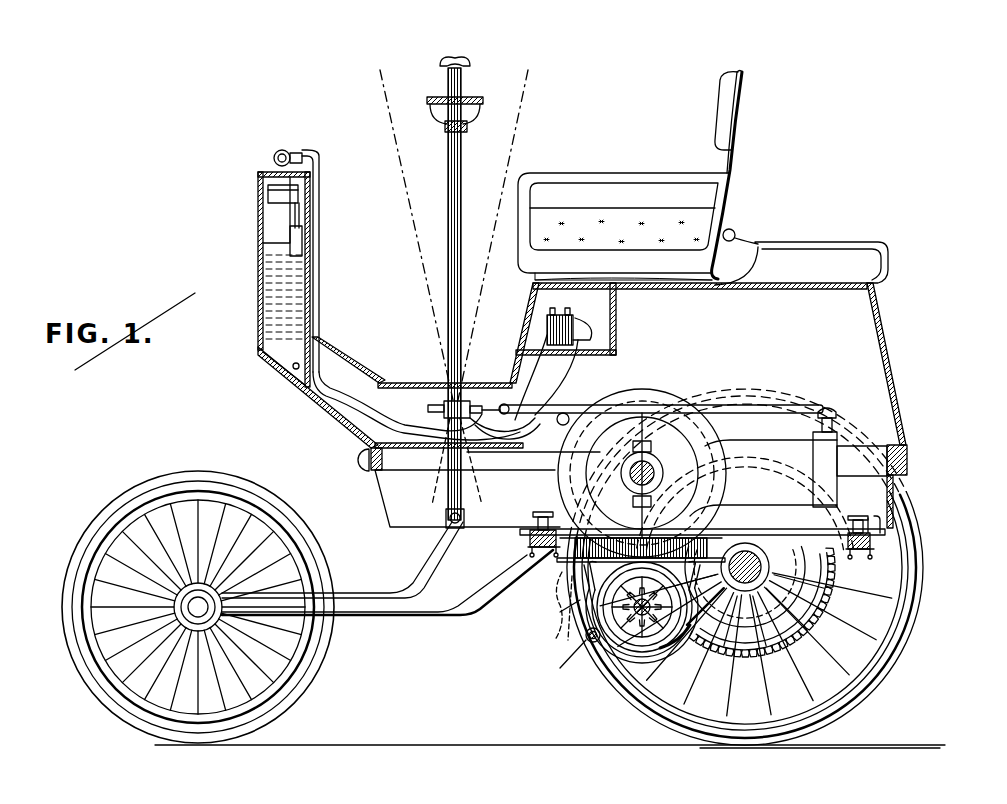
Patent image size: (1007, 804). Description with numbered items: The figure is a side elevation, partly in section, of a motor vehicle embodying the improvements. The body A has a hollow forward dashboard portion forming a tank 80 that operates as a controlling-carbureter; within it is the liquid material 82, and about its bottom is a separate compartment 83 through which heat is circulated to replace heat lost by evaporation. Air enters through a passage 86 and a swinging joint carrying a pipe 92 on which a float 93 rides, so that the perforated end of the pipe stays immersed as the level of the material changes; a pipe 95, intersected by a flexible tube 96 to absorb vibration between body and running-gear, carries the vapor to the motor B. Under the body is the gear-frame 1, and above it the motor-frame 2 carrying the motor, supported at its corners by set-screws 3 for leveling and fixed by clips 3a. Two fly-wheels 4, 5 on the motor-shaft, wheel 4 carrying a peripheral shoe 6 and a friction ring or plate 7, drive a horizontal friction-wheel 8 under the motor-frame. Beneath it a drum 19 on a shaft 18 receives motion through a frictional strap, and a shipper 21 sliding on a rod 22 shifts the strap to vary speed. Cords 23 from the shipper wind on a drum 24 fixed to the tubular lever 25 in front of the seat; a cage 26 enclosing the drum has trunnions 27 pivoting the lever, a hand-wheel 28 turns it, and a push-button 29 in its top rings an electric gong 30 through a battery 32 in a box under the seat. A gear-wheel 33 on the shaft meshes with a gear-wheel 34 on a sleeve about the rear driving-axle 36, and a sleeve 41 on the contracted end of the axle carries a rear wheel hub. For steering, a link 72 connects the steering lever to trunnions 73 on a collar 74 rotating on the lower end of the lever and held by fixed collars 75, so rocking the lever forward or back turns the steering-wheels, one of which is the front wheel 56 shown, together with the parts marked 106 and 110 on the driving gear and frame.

The gear-frame 1 is at (832, 550).
The motor-frame 2 is at (853, 520).
The set-screws 3 is at (703, 519).
The clips 3a is at (536, 538).
The wheel 4 is at (668, 404).
The wheel 5 is at (641, 550).
The peripheral shoe 6 is at (558, 493).
The ring or plate 7 is at (606, 405).
The friction-wheel 8 is at (745, 503).
The shaft 18 is at (665, 634).
The drum 19 is at (612, 612).
The shipper 21 is at (566, 580).
The rod or shaft 22 is at (585, 636).
The cords or straps 23 is at (560, 612).
The drum 24 is at (428, 409).
The tubular lever 25 is at (461, 218).
The frame or cage 26 is at (462, 405).
The trunnions 27 is at (470, 407).
The hand-wheel 28 is at (428, 100).
The push-button 29 is at (460, 50).
The electric gong 30 is at (357, 459).
The battery 32 is at (584, 351).
The gear-wheel 33 is at (586, 642).
The gear-wheel 34 is at (812, 596).
The rear driving-axle 36 is at (745, 587).
The sleeve 41 is at (745, 594).
The front wheel 56 is at (208, 607).
The link 72 is at (424, 571).
The trunnions 73 is at (486, 505).
The collar 74 is at (463, 530).
The fixed collars 75 is at (461, 512).
The tank 80 is at (258, 288).
The material 82 is at (264, 240).
The compartment 83 is at (298, 372).
The passage 86 is at (268, 192).
The pipe 92 is at (294, 216).
The float 93 is at (303, 240).
The pipe 95 is at (322, 282).
The flexible tube 96 is at (416, 406).
The gear rim 106 is at (782, 618).
The frame tube 110 is at (556, 590).
The body A is at (903, 409).
The motor B is at (642, 475).